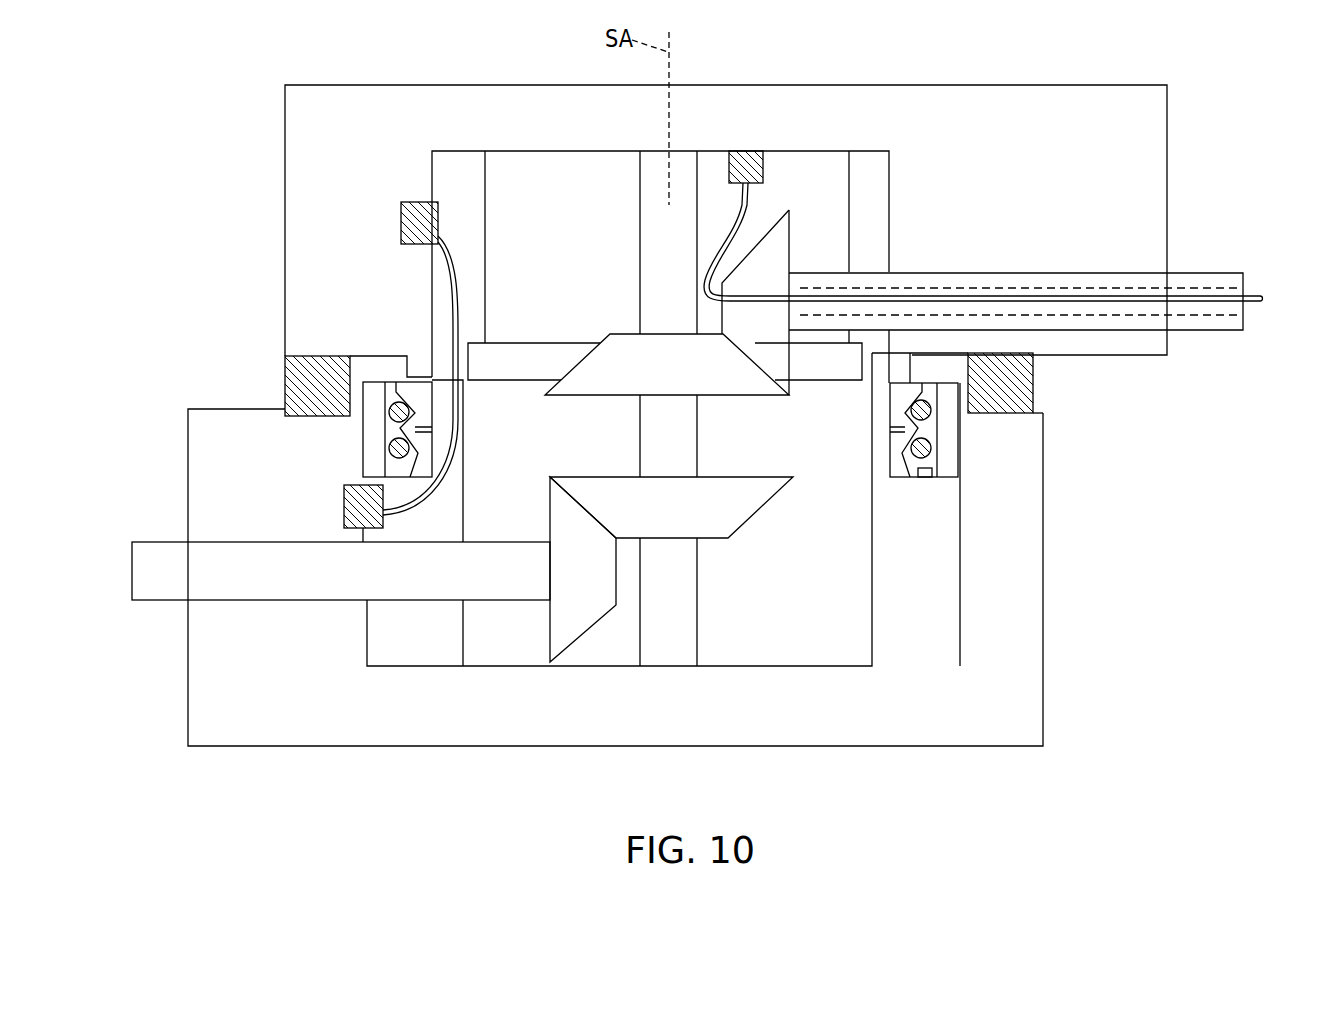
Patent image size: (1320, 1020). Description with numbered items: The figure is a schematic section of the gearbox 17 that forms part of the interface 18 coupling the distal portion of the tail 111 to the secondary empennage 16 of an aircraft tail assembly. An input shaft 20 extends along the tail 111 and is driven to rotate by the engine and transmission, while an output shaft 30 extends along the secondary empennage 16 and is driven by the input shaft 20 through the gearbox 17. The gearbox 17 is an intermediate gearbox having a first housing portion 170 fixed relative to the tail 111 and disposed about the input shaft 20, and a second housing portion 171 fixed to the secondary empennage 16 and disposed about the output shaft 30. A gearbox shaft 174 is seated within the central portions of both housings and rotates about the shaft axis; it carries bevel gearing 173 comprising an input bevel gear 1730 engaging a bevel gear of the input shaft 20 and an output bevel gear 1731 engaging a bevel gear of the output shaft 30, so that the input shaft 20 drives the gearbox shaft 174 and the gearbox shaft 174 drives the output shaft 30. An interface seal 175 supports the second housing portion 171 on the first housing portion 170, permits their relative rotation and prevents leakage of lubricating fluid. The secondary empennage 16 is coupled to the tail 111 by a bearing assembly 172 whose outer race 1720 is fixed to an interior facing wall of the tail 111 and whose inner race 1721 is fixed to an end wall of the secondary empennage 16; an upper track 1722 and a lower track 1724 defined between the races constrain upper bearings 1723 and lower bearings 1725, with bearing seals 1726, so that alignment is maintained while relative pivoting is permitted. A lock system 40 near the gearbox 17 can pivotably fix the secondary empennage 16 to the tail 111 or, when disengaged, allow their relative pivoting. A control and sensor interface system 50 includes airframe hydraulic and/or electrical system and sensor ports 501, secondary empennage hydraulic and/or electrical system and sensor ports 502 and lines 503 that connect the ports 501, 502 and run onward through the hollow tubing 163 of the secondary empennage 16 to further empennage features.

The interface 18 is at (198, 87).
The secondary empennage 16 is at (1035, 95).
The tail 111 is at (195, 688).
The gearbox 17 is at (862, 609).
The second housing portion 171 is at (581, 236).
The lock system 40 is at (291, 393).
The upper track 1722 is at (950, 398).
The input shaft 20 is at (152, 603).
The output shaft 30 is at (1183, 280).
The hollow tubing 163 is at (1242, 285).
The first housing portion 170 is at (809, 568).
The gearbox shaft 174 is at (688, 610).
The interface seal 175 is at (558, 352).
The output bevel gear 1731 is at (732, 268).
The bevel gearing 173 is at (588, 484).
The input bevel gear 1730 is at (565, 625).
The bearing assembly 172 is at (396, 385).
The outer race 1720 is at (942, 433).
The lower track 1724 is at (952, 462).
The inner race 1721 is at (907, 467).
The upper bearings 1723 is at (915, 393).
The lower bearings 1725 is at (907, 445).
The bearing seals 1726 is at (922, 475).
The control and sensor interface system 50 is at (401, 222).
The secondary empennage hydraulic and/or electrical system and sensor ports 502 is at (428, 215).
The airframe hydraulic and/or electrical system and sensor ports 501 is at (350, 505).
The lines 503 is at (452, 301).